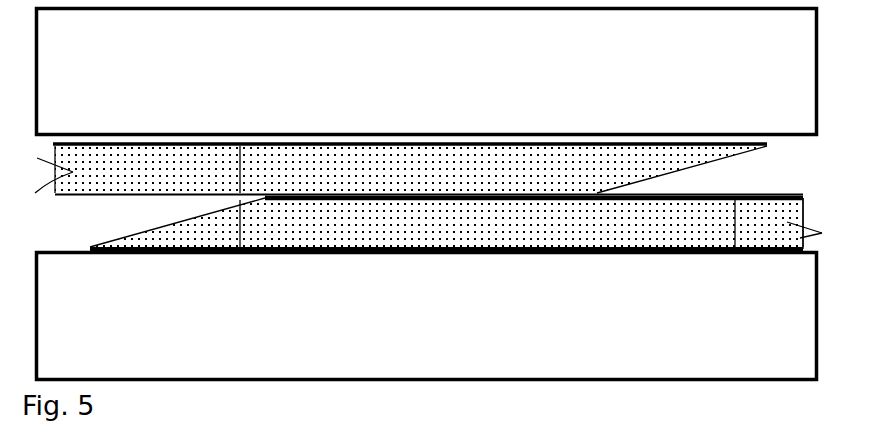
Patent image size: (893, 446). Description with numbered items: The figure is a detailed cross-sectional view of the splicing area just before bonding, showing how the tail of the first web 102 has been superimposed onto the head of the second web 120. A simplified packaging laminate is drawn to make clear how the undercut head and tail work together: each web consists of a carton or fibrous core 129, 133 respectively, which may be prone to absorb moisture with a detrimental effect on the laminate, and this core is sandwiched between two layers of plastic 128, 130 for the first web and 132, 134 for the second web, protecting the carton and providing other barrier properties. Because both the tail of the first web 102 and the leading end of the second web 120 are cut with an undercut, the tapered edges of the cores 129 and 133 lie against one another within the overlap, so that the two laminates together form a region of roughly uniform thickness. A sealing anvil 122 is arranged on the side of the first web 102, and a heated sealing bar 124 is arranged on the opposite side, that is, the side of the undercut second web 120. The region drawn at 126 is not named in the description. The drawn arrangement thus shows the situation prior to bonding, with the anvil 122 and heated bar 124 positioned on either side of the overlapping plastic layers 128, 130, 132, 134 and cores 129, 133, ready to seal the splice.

The web 102 is at (269, 157).
The second web 120 is at (340, 232).
The sealing anvil 122 is at (441, 90).
The heated sealing bar 124 is at (440, 333).
The leading edge of first electrode layer 126 is at (95, 197).
The layer of plastic 128 is at (110, 143).
The carton core 129 is at (697, 165).
The layer of plastic 130 is at (424, 239).
The layer of plastic 132 is at (768, 256).
The carton core 133 is at (158, 228).
The layer of plastic 134 is at (790, 197).